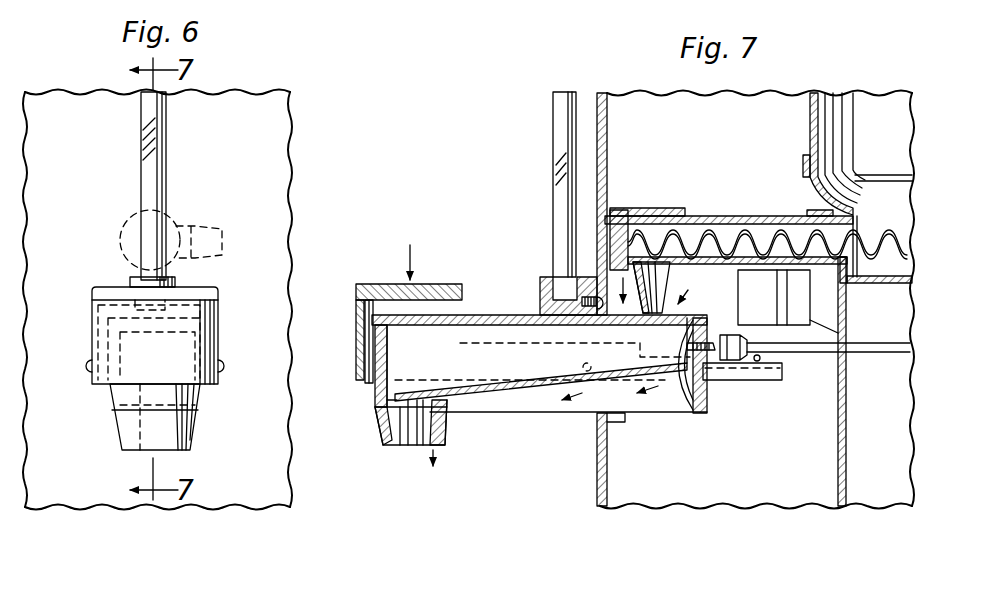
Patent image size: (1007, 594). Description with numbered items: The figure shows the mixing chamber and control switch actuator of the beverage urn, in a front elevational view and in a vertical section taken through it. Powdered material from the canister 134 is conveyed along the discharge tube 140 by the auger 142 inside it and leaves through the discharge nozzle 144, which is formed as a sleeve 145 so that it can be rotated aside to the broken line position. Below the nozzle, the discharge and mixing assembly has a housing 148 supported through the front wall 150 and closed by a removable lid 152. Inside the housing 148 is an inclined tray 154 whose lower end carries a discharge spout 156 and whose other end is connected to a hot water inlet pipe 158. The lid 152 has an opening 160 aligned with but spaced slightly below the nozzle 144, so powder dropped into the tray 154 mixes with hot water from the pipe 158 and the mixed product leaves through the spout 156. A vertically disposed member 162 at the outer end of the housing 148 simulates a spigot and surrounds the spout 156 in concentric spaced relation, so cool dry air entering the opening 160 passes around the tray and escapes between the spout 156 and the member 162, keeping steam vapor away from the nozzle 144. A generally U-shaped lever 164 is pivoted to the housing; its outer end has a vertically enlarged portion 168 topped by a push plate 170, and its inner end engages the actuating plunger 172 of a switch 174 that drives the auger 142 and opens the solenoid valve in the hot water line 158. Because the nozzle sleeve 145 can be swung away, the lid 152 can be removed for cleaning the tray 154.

In FIG. 7, the canister 134 is at (832, 95).
In FIG. 7, the discharge tube 140 is at (748, 216).
In FIG. 7, the auger 142 is at (690, 230).
In FIG. 6, the discharge nozzle 144 is at (210, 227).
In FIG. 7, the sleeve 145 is at (642, 210).
In FIG. 7, the housing 148 is at (709, 402).
In FIG. 6, the front wall 150 is at (270, 121).
In FIG. 7, the front wall 150 is at (598, 447).
In FIG. 7, the removable lid 152 is at (490, 315).
In FIG. 7, the inclined tray 154 is at (526, 398).
In FIG. 7, the discharge spout 156 is at (418, 440).
In FIG. 7, the hot water inlet pipe 158 is at (870, 346).
In FIG. 7, the opening 160 is at (668, 385).
In FIG. 7, the vertically disposed member 162 is at (376, 380).
In FIG. 7, the U-shaped actuator or lever 164 is at (733, 373).
In FIG. 6, the vertically enlarged portion 168 is at (108, 314).
In FIG. 7, the vertically enlarged portion 168 is at (358, 366).
In FIG. 6, the push plate 170 is at (120, 292).
In FIG. 7, the push plate 170 is at (437, 286).
In FIG. 7, the actuating plunger 172 is at (760, 358).
In FIG. 7, the switch 174 is at (765, 300).